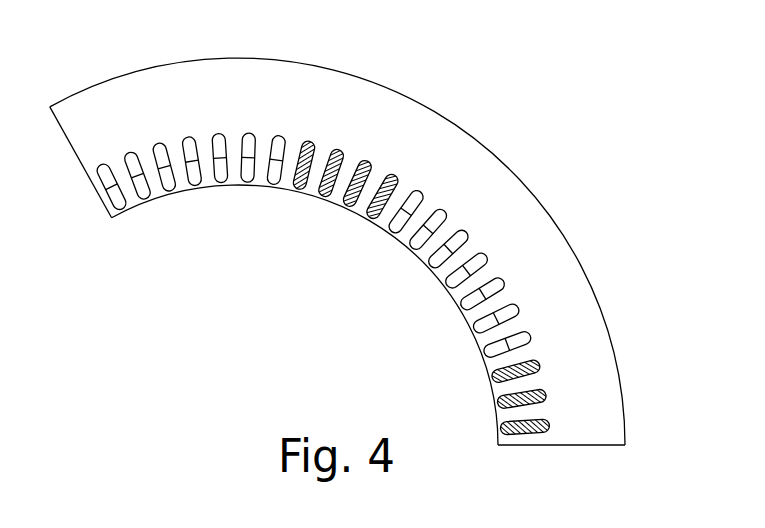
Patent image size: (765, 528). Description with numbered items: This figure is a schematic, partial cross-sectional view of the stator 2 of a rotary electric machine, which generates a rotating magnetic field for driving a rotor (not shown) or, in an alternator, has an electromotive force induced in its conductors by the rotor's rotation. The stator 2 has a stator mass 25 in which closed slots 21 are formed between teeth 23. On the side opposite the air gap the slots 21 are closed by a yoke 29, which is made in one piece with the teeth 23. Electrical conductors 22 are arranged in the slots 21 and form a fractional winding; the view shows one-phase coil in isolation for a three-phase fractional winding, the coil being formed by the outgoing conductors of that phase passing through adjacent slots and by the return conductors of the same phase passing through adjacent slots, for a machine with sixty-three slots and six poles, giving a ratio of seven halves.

The stator 2 is at (362, 231).
The slots 21 is at (128, 190).
The electrical conductors 22 is at (408, 183).
The teeth 23 is at (183, 191).
The stator mass 25 is at (521, 174).
The yoke 29 is at (382, 112).